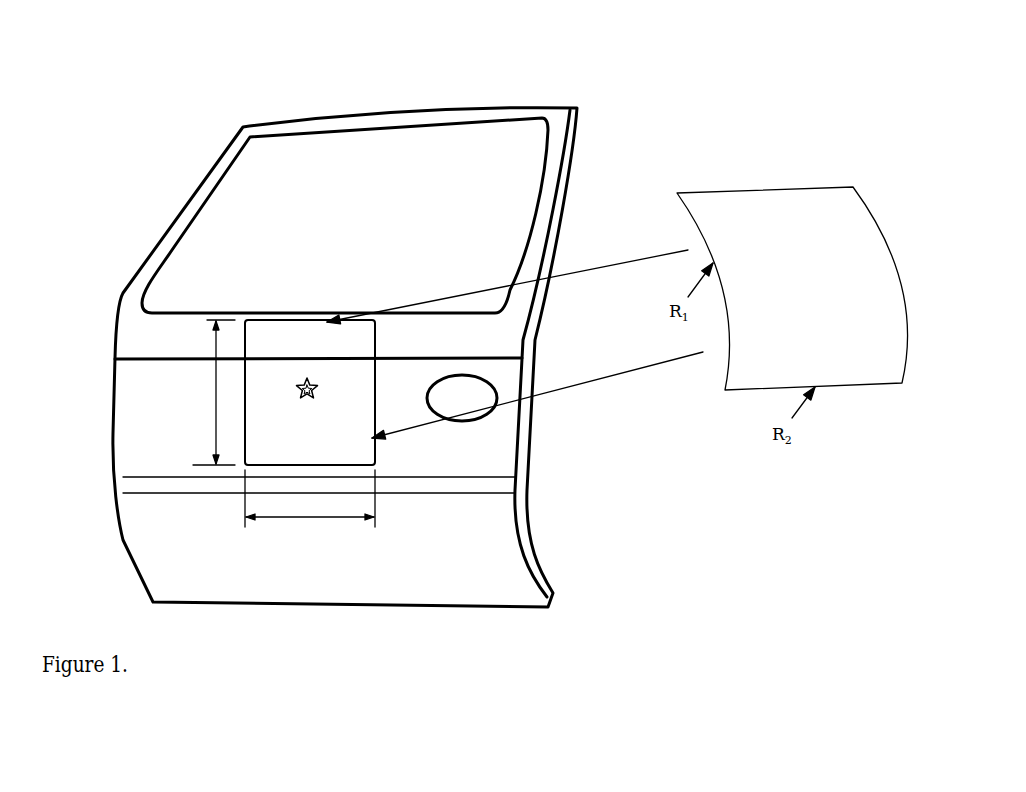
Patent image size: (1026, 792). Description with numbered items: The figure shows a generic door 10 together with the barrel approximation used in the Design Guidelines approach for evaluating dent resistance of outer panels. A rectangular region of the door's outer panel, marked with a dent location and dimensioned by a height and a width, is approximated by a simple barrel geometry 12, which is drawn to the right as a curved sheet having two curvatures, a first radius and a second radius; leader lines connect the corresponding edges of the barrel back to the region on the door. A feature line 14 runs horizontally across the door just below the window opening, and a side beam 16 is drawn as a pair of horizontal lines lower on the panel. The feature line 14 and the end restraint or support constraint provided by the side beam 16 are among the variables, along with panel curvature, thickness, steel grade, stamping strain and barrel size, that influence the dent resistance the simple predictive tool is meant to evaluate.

The generic door 10 is at (585, 147).
The barrel geometry 12 is at (247, 390).
The feature line 14 is at (158, 357).
The side beam 16 is at (495, 482).